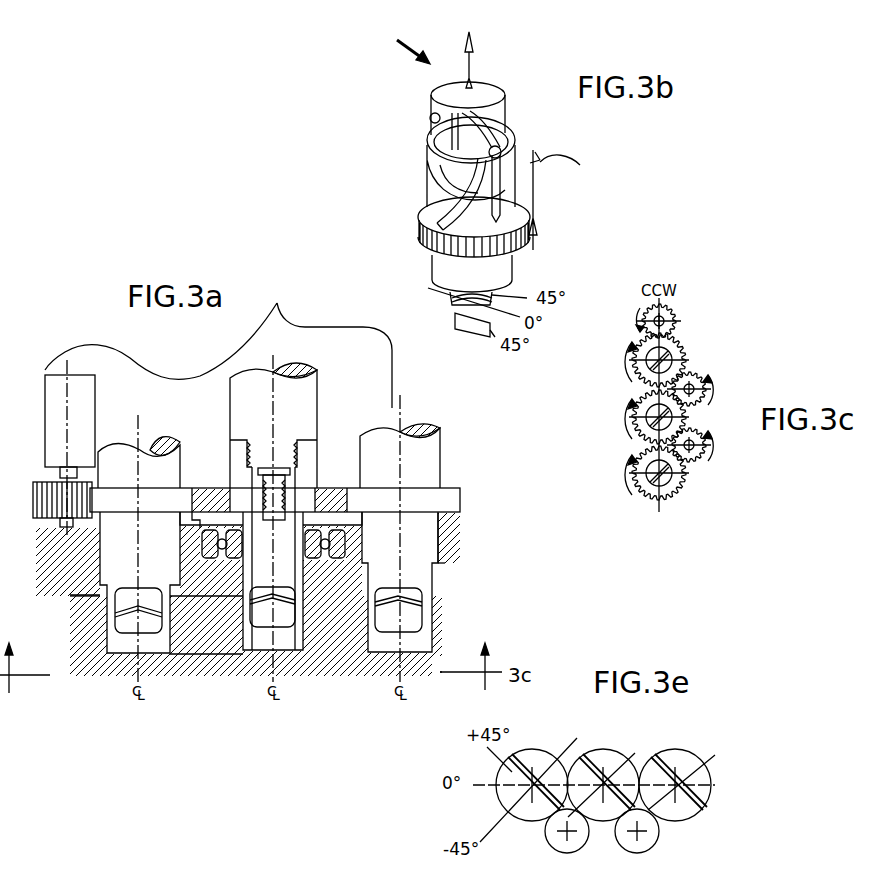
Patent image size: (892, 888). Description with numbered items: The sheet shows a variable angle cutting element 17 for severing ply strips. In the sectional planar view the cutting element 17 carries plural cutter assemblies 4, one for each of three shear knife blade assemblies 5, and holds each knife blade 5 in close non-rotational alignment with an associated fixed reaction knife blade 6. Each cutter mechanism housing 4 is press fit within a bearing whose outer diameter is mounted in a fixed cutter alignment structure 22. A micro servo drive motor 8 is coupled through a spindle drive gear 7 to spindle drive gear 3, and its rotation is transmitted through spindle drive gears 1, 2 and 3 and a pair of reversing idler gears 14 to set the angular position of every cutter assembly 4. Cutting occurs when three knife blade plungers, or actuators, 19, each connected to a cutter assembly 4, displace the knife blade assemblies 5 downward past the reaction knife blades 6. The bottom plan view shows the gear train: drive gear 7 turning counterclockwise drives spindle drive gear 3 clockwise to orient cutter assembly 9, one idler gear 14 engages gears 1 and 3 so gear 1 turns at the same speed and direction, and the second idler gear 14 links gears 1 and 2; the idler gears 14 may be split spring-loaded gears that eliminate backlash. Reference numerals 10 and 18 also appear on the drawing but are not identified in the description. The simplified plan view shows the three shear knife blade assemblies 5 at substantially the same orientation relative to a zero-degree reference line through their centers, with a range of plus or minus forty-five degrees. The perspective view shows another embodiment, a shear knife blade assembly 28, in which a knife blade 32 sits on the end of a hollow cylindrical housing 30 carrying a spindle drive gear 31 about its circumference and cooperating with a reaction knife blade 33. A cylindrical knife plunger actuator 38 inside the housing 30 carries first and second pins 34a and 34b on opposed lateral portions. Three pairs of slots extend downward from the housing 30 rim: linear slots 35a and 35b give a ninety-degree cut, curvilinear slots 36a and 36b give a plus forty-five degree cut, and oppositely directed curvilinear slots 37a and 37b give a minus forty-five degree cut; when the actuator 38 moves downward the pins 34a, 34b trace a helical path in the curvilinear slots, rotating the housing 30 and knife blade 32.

In FIG. 3A, the spindle drive gear 1 is at (318, 485).
In FIG. 3C, the spindle drive gear 1 is at (700, 414).
In FIG. 3A, the spindle drive gear 2 is at (412, 498).
In FIG. 3C, the spindle drive gear 2 is at (672, 486).
In FIG. 3E, the spindle drive gear 2 is at (566, 778).
In FIG. 3A, the spindle drive gear 3 is at (170, 492).
In FIG. 3C, the spindle drive gear 3 is at (672, 351).
In FIG. 3A, the cutter assembly 4 is at (306, 455).
In FIG. 3C, the cutter assembly 4 is at (650, 440).
In FIG. 3A, the shear knife blade assembly 5 is at (160, 606).
In FIG. 3E, the shear knife blade assembly 5 is at (520, 757).
In FIG. 3A, the fixed reaction knife blade 6 is at (246, 650).
In FIG. 3A, the spindle drive gear 7 is at (60, 510).
In FIG. 3C, the spindle drive gear 7 is at (670, 318).
In FIG. 3A, the micro servo drive motor 8 is at (82, 422).
In FIG. 3A, the cutter assembly 9 is at (100, 595).
In FIG. 3C, the cutter assembly 9 is at (645, 383).
In FIG. 3A, the gear 10 is at (410, 547).
In FIG. 3C, the gear 10 is at (656, 494).
In FIG. 3C, the idler gear 14 is at (700, 380).
In FIG. 3A, the variable angle cutting element 17 is at (218, 343).
In FIG. 3A, the base 18 is at (196, 628).
In FIG. 3A, the knife blade plunger 19 is at (307, 396).
In FIG. 3A, the fixed cutter alignment structure 22 is at (204, 602).
In FIG. 3B, the shear knife blade assembly 28 is at (398, 43).
In FIG. 3B, the cylindrical housing 30 is at (435, 172).
In FIG. 3B, the spindle drive gear 31 is at (430, 258).
In FIG. 3B, the knife blade 32 is at (493, 290).
In FIG. 3B, the reaction knife blade 33 is at (475, 330).
In FIG. 3B, the first pin 34a is at (430, 117).
In FIG. 3B, the second pin 34b is at (497, 147).
In FIG. 3B, the linear slot 35a is at (450, 118).
In FIG. 3B, the linear slot 35b is at (498, 192).
In FIG. 3B, the curvilinear slot 36a is at (413, 193).
In FIG. 3B, the curvilinear slot 36b is at (458, 130).
In FIG. 3B, the curvilinear slot 37a is at (442, 143).
In FIG. 3B, the curvilinear slot 37b is at (517, 148).
In FIG. 3B, the knife plunger actuator 38 is at (440, 92).